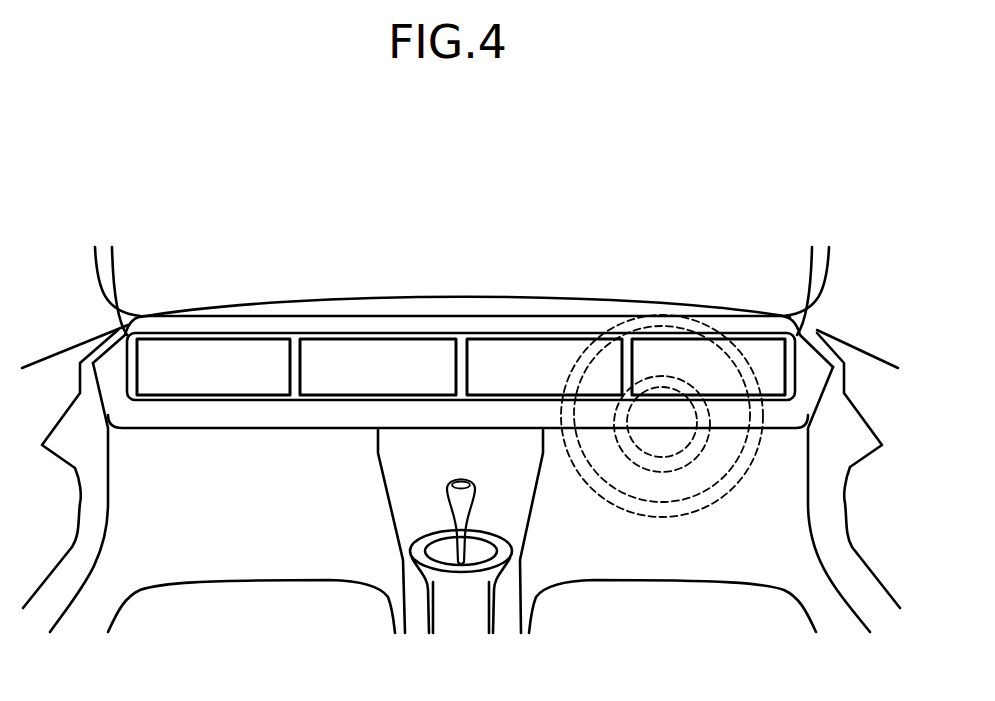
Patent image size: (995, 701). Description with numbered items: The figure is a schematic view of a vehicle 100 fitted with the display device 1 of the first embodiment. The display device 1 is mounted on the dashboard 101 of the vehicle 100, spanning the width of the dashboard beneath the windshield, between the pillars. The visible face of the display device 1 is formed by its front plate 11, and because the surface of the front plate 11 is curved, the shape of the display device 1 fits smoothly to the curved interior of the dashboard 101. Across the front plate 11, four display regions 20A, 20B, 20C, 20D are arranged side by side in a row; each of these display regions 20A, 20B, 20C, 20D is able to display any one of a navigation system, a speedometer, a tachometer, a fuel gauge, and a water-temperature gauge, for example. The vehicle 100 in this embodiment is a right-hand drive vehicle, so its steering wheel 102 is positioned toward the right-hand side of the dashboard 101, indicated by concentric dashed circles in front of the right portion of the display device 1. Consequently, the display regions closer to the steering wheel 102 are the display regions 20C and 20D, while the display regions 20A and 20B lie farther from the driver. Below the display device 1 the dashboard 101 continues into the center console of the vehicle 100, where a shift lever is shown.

The display device 1 is at (417, 307).
The front plate 11 is at (153, 401).
The display region 20A is at (205, 377).
The display region 20B is at (343, 378).
The display region 20C is at (518, 380).
The display region 20D is at (770, 380).
The vehicle 100 is at (722, 182).
The dashboard 101 is at (256, 323).
The steering wheel 102 is at (578, 352).